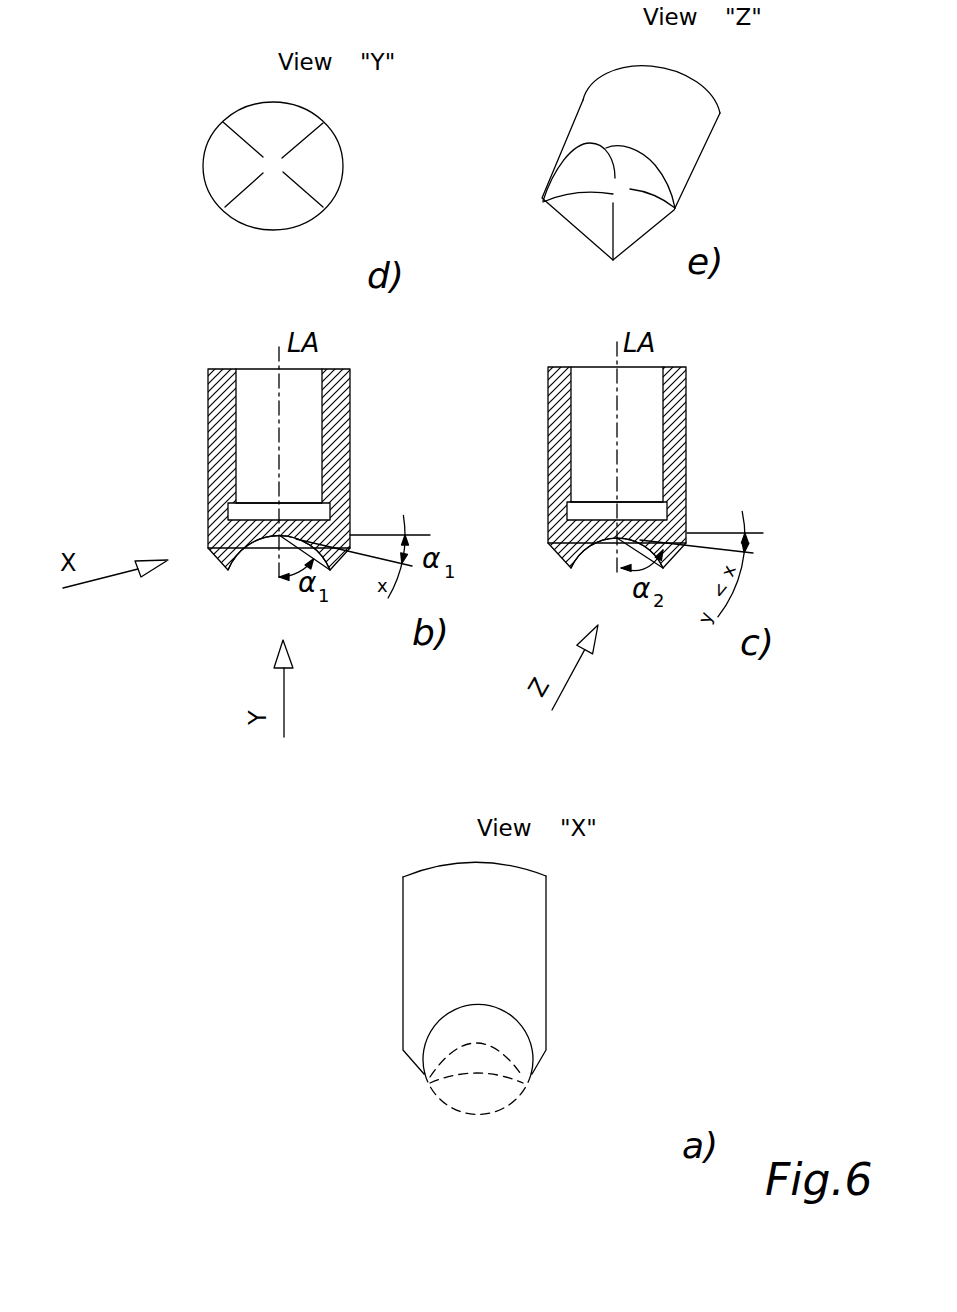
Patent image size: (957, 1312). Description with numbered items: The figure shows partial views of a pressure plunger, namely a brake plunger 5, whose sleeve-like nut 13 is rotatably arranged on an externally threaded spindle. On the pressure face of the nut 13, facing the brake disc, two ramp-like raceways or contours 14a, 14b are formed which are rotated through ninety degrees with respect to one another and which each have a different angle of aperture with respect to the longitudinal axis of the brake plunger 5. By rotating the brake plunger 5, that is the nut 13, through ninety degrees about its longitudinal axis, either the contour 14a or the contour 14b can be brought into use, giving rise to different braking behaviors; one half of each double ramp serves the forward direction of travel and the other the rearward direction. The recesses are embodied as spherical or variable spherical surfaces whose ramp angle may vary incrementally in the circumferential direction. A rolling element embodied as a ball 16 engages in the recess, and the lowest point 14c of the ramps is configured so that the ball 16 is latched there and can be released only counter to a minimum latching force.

The brake plunger 5 is at (345, 143).
The nut 13 is at (333, 170).
The contour 14a is at (249, 571).
The contour 14b is at (591, 571).
The lowest point 14c is at (604, 201).
The ball 16 is at (477, 1117).